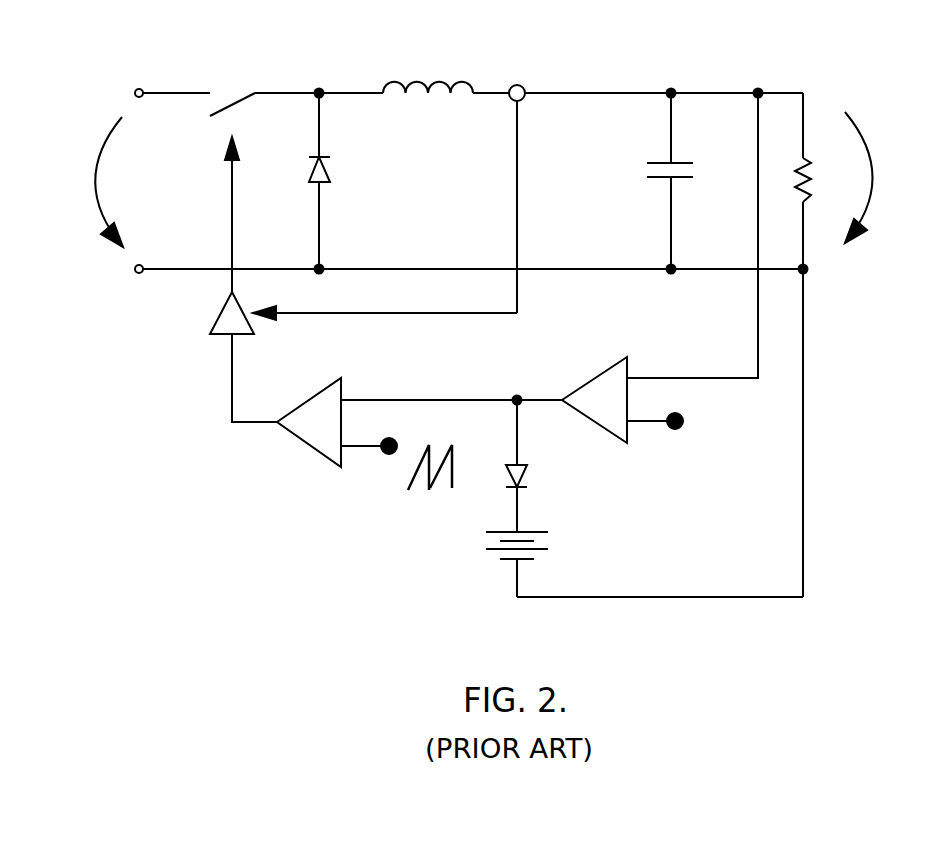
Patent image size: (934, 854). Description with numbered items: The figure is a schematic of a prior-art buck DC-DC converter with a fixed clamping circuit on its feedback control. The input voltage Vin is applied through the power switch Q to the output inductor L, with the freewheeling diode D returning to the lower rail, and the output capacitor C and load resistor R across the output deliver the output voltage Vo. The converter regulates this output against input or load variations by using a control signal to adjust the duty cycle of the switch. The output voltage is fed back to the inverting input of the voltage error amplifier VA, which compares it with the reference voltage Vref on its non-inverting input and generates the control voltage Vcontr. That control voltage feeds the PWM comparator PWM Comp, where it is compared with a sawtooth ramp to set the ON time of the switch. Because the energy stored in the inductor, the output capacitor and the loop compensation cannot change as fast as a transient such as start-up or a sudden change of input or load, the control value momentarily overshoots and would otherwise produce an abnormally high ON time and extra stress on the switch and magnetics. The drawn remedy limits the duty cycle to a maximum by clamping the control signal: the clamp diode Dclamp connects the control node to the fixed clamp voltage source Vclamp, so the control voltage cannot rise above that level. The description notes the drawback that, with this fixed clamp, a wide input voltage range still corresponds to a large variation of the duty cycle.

The power switch Q is at (232, 83).
The output inductor L is at (428, 72).
The freewheeling diode D is at (335, 169).
The output capacitor C is at (676, 160).
The load resistor R is at (817, 180).
The input voltage Vin is at (85, 182).
The output voltage Vo is at (877, 177).
The PWM comparator PWM Comp is at (311, 434).
The control voltage Vcontr is at (451, 385).
The voltage error amplifier VA is at (589, 396).
The reference voltage Vref is at (682, 421).
The clamp diode Dclamp is at (562, 477).
The clamp voltage source Vclamp is at (546, 546).